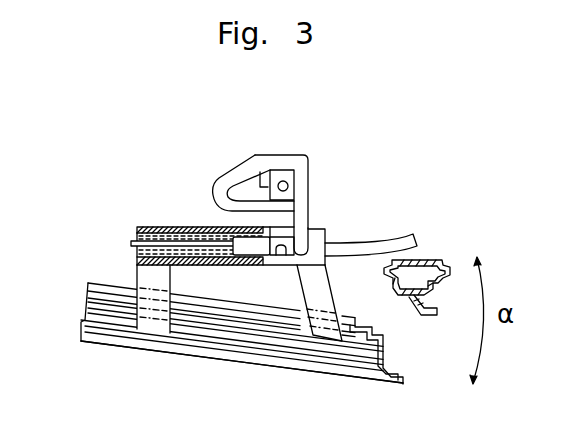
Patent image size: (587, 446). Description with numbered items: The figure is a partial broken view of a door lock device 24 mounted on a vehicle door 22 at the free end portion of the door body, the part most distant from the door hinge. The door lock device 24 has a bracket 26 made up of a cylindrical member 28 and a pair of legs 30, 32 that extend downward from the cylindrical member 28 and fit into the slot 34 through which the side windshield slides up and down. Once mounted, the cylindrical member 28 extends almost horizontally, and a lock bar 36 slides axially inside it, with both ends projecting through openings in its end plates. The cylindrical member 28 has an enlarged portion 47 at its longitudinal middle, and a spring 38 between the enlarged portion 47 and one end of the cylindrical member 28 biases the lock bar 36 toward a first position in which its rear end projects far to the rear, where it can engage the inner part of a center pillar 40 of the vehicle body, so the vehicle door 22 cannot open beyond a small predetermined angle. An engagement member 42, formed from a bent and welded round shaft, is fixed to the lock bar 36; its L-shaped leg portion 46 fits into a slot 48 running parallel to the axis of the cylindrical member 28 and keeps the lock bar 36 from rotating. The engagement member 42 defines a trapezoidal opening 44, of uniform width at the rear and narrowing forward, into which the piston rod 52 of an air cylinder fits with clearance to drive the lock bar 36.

The vehicle door 22 is at (88, 282).
The door lock device 24 is at (185, 150).
The bracket 26 is at (141, 219).
The cylindrical member 28 is at (212, 226).
The leg 30 is at (322, 289).
The leg 32 is at (147, 279).
The slot 34 is at (117, 322).
The lock bar 36 is at (370, 243).
The spring 38 is at (156, 232).
The center pillar 40 is at (435, 258).
The engagement member 42 is at (303, 178).
The opening 44 is at (267, 184).
The L-shaped leg portion 46 is at (306, 221).
The enlarged portion 47 is at (243, 251).
The slot 48 is at (282, 251).
The piston rod 52 is at (283, 181).